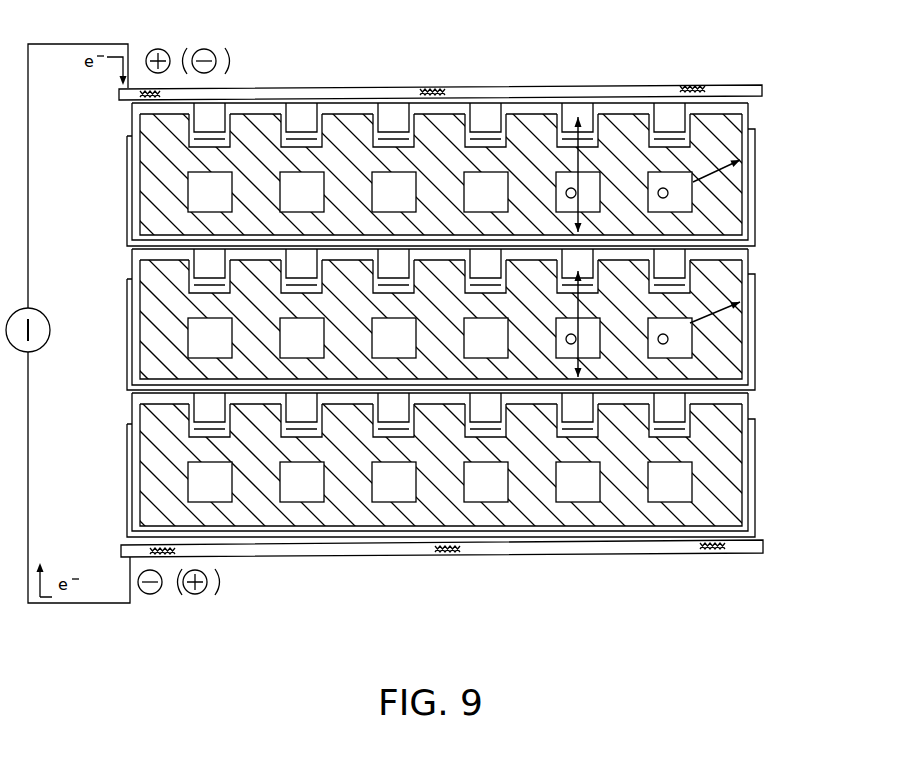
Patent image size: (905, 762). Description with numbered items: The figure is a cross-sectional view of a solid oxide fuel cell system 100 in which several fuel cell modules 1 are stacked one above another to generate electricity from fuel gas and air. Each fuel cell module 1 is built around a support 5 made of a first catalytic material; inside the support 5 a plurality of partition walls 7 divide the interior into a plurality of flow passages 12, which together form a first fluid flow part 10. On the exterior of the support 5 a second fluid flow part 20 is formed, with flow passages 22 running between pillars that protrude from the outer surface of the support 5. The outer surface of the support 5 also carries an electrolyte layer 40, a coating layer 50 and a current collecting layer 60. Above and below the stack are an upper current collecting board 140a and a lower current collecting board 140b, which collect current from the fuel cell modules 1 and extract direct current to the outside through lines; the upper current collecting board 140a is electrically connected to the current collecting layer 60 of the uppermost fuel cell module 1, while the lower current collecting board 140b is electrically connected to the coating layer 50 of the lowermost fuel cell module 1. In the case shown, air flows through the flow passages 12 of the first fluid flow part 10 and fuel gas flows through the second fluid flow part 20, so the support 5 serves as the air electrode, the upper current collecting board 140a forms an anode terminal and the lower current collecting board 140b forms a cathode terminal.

The fuel cell module 1 is at (769, 137).
The solid oxide fuel cell system 100 is at (820, 196).
The support 5 is at (720, 202).
The partition walls 7 is at (437, 484).
The first fluid flow part 10 is at (163, 327).
The flow passages 12 is at (568, 485).
The second fluid flow part 20 is at (212, 120).
The flow passages 22 is at (300, 265).
The electrolyte layer 40 is at (743, 312).
The coating layer 50 is at (750, 332).
The current collecting layer 60 is at (446, 253).
The upper current collecting board 140a is at (527, 93).
The lower current collecting board 140b is at (650, 548).